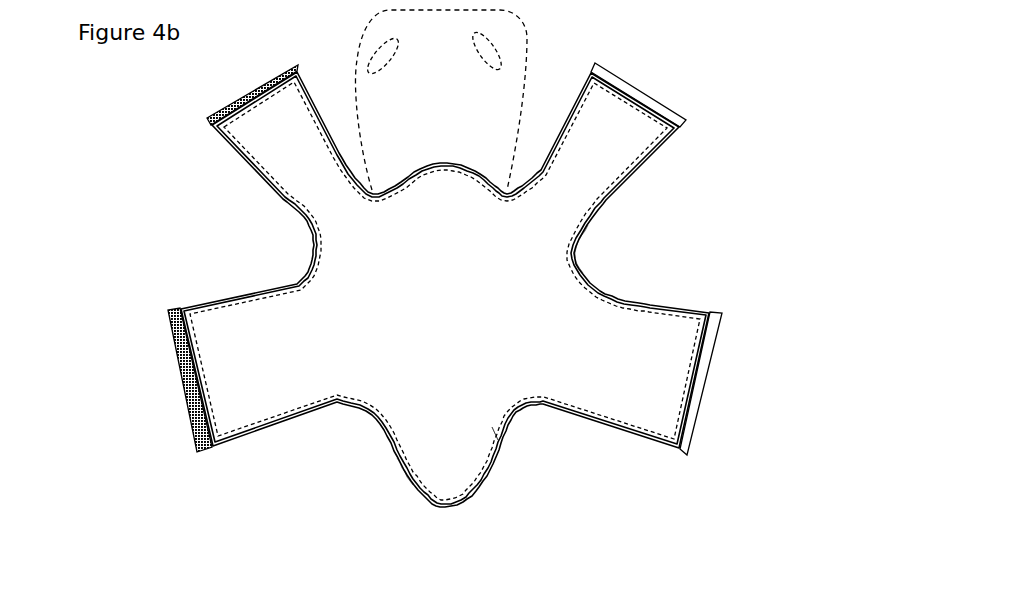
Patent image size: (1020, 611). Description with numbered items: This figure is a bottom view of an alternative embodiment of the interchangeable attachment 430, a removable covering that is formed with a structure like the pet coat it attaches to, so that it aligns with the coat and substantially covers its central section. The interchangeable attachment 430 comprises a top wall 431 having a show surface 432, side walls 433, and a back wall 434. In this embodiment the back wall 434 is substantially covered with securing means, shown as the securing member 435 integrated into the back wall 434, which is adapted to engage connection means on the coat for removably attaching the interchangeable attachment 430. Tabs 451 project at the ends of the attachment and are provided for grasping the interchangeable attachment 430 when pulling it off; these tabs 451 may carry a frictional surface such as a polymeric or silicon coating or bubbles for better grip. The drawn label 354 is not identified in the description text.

The interchangeable attachment 430 is at (478, 311).
The tabs 451 is at (253, 115).
The securing member 435 is at (587, 268).
The layer 354 is at (247, 340).
The back wall 434 is at (253, 360).
The side walls 433 is at (426, 512).
The top wall 431 is at (492, 427).
The show surface 432 is at (553, 482).